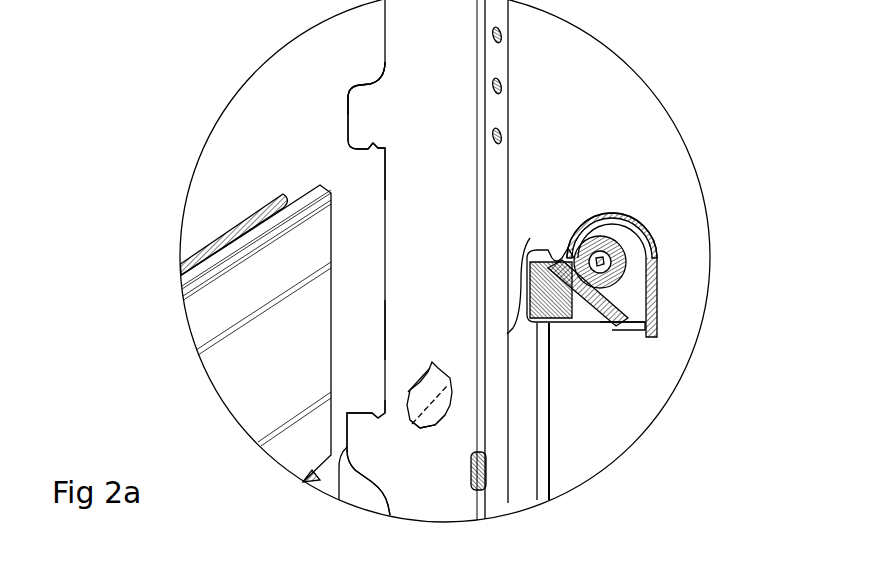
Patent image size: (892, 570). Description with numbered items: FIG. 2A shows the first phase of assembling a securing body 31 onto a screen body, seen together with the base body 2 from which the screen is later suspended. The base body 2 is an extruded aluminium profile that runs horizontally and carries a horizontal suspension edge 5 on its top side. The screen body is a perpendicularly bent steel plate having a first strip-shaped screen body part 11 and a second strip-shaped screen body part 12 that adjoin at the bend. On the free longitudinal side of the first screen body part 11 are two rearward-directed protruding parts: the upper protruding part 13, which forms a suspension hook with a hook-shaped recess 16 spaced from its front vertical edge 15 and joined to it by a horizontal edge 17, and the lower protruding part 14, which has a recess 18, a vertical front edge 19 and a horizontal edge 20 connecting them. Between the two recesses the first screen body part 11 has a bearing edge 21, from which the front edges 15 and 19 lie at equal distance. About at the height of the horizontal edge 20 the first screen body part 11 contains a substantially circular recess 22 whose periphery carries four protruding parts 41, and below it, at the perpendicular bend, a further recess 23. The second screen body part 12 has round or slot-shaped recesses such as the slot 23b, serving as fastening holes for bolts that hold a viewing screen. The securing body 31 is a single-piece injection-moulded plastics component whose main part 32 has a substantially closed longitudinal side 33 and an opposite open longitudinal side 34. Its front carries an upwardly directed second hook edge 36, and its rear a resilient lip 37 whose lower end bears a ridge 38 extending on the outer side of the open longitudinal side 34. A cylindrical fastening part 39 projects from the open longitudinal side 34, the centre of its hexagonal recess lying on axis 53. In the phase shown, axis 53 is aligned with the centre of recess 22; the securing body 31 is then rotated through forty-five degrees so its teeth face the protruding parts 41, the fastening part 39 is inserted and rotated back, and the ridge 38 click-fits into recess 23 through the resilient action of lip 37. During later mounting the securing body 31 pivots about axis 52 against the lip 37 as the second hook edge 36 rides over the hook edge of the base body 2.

The base body 2 is at (275, 395).
The suspension edge 5 is at (307, 192).
The first strip-shaped screen body part 11 is at (445, 265).
The second strip-shaped screen body part 12 is at (497, 164).
The upper protruding part 13 is at (360, 125).
The lower protruding part 14 is at (388, 462).
The front vertical edge 15 is at (347, 113).
The hook-shaped recess 16 is at (379, 150).
The horizontal edge 17 is at (352, 152).
The recess 18 is at (371, 411).
The vertical front edge 19 is at (343, 500).
The horizontal edge 20 is at (359, 414).
The bearing edge 21 is at (383, 348).
The recess 22 is at (445, 430).
The recess 23 is at (488, 473).
The slot-shaped recess 23b is at (501, 88).
The securing body 31 is at (638, 313).
The main part 32 is at (615, 198).
The closed longitudinal side 33 is at (612, 335).
The open longitudinal side 34 is at (582, 332).
The second hook edge 36 is at (548, 250).
The resilient lip 37 is at (658, 307).
The ridge 38 is at (657, 338).
The cylindrical fastening part 39 is at (622, 263).
The protruding parts 41 is at (431, 366).
The axis 52 is at (609, 337).
The axis 53 is at (523, 273).